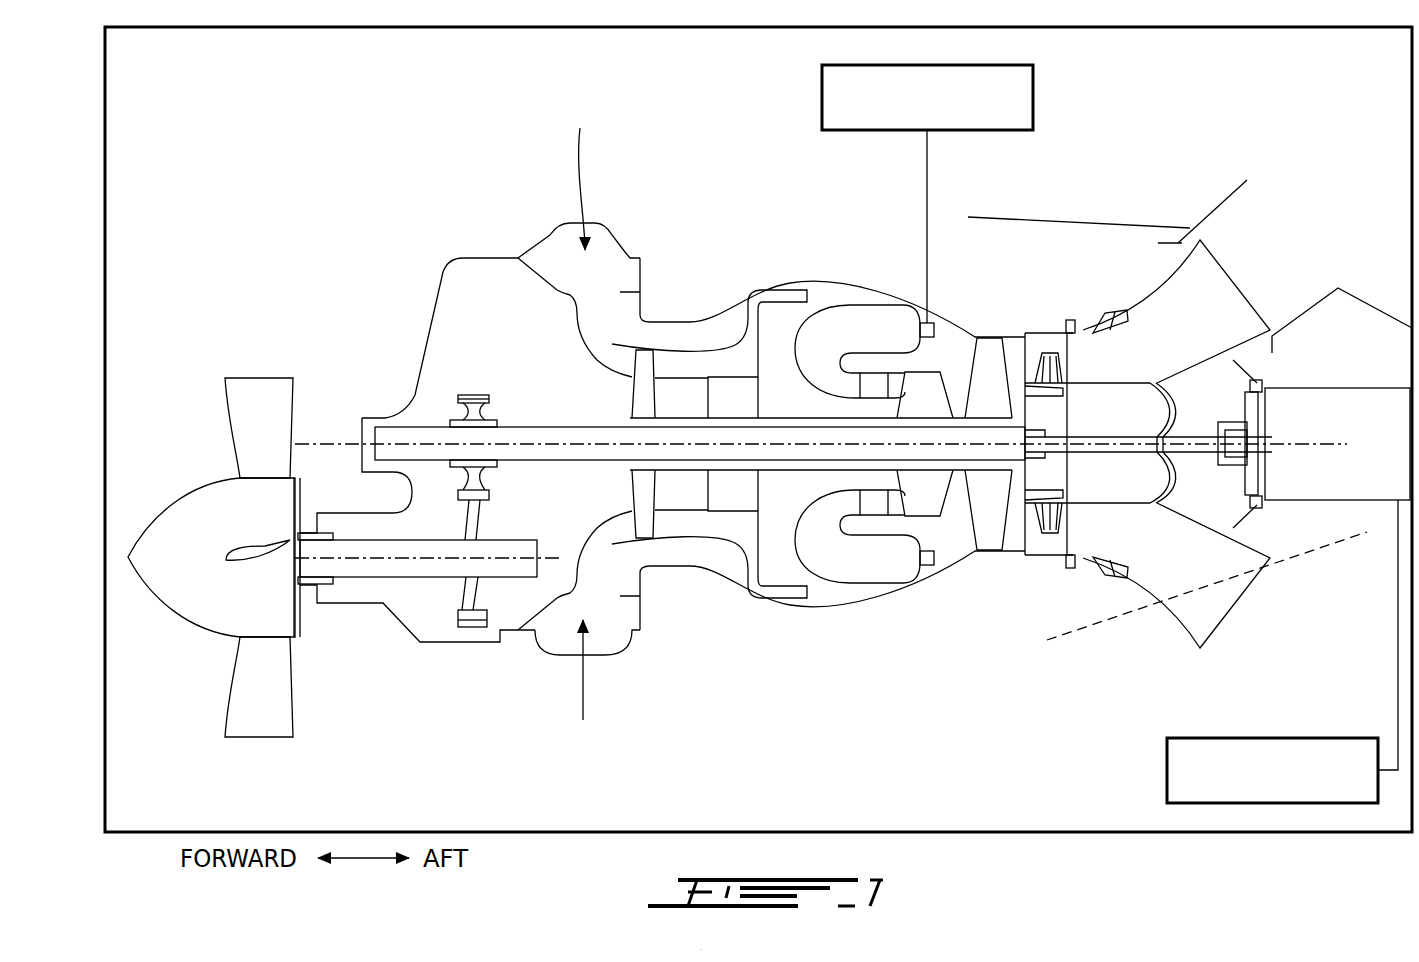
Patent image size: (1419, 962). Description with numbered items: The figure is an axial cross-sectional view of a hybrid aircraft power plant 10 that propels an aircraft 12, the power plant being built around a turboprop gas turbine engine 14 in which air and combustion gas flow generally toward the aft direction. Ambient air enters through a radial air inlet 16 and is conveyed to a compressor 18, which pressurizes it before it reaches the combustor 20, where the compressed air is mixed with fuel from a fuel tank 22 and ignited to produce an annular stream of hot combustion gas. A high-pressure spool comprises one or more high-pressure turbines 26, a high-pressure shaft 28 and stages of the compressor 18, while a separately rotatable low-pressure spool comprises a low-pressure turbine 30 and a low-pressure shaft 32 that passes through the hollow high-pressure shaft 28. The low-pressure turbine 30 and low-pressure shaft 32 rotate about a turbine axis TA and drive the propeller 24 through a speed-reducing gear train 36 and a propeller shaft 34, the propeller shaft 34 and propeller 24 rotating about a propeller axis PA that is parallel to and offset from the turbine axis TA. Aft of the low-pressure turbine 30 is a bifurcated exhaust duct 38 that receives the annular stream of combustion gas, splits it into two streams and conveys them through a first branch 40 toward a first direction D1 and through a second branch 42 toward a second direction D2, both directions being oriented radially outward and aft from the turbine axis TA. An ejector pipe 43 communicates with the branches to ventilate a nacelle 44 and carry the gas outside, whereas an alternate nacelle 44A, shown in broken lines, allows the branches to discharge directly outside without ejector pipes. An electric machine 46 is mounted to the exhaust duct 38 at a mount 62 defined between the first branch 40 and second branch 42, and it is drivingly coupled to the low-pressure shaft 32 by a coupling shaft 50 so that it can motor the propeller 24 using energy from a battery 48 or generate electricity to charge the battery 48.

The hybrid aircraft power plant 10 is at (255, 196).
The aircraft 12 is at (105, 60).
The turboprop gas turbine engine 14 is at (747, 224).
The air inlet 16 is at (556, 262).
The compressor 18 is at (697, 388).
The combustor 20 is at (868, 330).
The fuel tank 22 is at (1040, 97).
The propeller 24 is at (247, 694).
The high-pressure turbine 26 is at (925, 508).
The high-pressure shaft 28 is at (813, 500).
The low-pressure turbine 30 is at (988, 522).
The low-pressure shaft 32 is at (600, 462).
The propeller shaft 34 is at (512, 578).
The gear train 36 is at (468, 372).
The bifurcated exhaust duct 38 is at (1103, 592).
The first branch 40 is at (1173, 295).
The second branch 42 is at (1182, 582).
The ejector pipe 43 is at (1209, 212).
The nacelle 44 is at (1085, 220).
The alternate nacelle 44A is at (1050, 642).
The electric machine 46 is at (1373, 500).
The battery 48 is at (1183, 773).
The coupling shaft 50 is at (1101, 452).
The mount 62 is at (1270, 508).
The turbine axis TA is at (322, 438).
The propeller axis PA is at (385, 588).
The first direction D1 is at (1213, 298).
The second direction D2 is at (1212, 587).